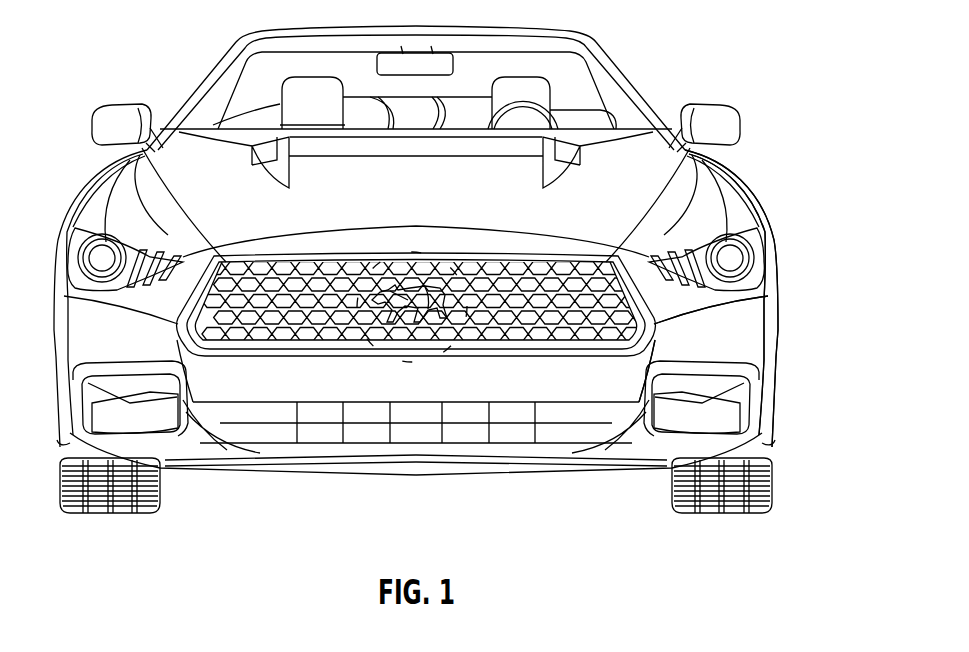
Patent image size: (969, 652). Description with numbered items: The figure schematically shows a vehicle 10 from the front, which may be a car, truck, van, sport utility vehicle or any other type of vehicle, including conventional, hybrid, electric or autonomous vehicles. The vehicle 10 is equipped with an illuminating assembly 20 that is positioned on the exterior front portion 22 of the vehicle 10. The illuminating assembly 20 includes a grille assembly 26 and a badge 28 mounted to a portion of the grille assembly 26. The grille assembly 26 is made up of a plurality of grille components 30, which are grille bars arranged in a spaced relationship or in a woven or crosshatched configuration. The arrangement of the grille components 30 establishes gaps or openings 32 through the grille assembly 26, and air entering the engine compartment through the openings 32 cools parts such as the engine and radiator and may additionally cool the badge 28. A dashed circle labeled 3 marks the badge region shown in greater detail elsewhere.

The vehicle 10 is at (757, 66).
The illuminating assembly 20 is at (527, 220).
The exterior front portion 22 is at (755, 329).
The grille components 30 is at (303, 268).
The grille assembly 26 is at (517, 315).
The badge 28 is at (437, 307).
The region shown in detail 3 is at (412, 250).
The openings 32 is at (657, 333).